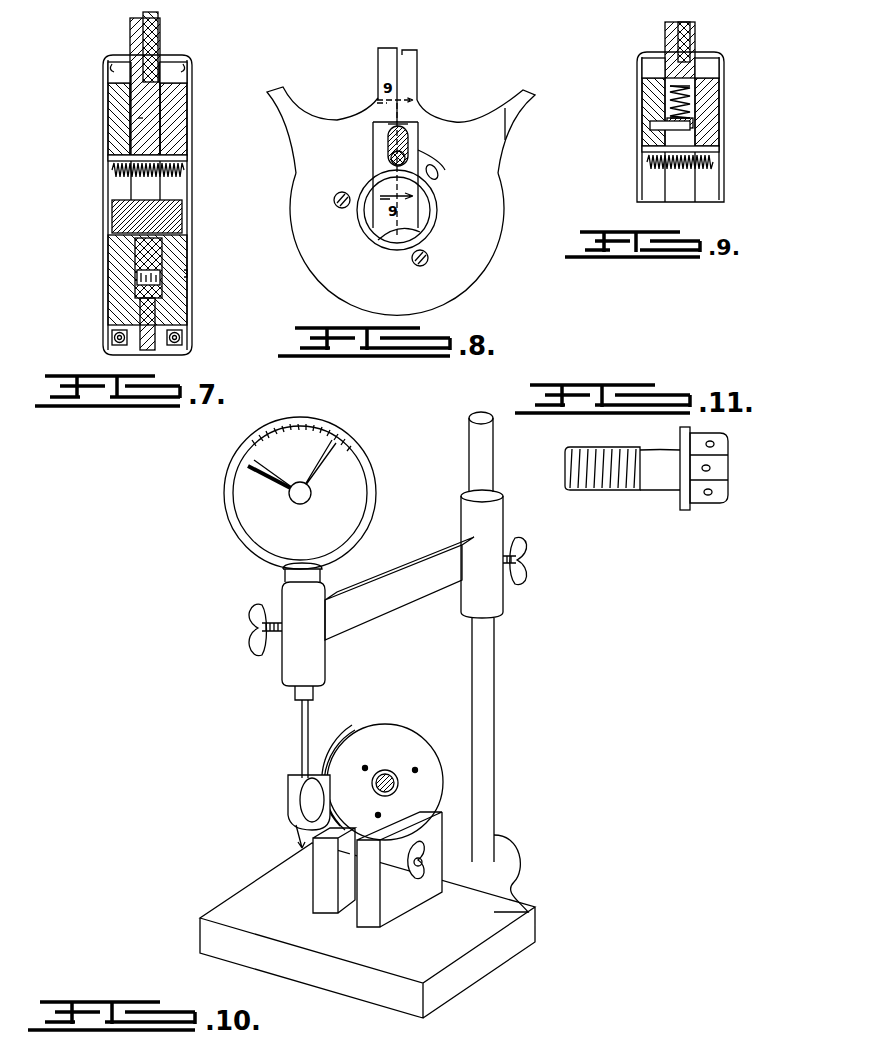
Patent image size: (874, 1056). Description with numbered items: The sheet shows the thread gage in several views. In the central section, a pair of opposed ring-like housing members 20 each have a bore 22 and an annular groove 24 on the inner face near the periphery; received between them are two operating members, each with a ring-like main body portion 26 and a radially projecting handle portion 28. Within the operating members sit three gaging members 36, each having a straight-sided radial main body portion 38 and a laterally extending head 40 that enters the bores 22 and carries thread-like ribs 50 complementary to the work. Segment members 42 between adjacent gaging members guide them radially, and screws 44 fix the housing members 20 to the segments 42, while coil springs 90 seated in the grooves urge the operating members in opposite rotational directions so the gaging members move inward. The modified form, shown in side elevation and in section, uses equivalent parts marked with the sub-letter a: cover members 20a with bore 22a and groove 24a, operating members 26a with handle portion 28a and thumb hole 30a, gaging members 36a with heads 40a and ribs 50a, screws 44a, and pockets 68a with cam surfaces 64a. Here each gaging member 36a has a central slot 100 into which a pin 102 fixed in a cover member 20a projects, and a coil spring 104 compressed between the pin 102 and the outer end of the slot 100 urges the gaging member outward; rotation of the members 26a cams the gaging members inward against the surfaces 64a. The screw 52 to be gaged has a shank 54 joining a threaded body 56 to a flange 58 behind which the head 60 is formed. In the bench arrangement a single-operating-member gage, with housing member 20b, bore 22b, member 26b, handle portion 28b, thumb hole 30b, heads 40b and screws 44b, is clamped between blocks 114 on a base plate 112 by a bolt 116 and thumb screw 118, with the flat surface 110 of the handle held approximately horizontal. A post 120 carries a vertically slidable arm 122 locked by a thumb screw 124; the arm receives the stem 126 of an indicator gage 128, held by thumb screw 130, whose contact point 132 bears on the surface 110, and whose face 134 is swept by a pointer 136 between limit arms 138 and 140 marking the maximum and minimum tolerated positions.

In FIG. 7, the housing member 20 is at (108, 110).
In FIG. 7, the bore 22 is at (112, 157).
In FIG. 7, the annular concentric groove 24 is at (108, 78).
In FIG. 7, the main body portion of operating member 26 is at (135, 72).
In FIG. 7, the handle portion 28 is at (160, 38).
In FIG. 7, the gaging member 36 is at (135, 128).
In FIG. 7, the main body portion of gaging member 38 is at (134, 123).
In FIG. 7, the head 40 is at (122, 170).
In FIG. 7, the segment member 42 is at (140, 250).
In FIG. 7, the screw 44 is at (190, 270).
In FIG. 7, the thread-like rib 50 is at (120, 214).
In FIG. 7, the coil spring 90 is at (112, 337).
In FIG. 8, the cover member 20a is at (300, 212).
In FIG. 9, the cover member 20a is at (640, 108).
In FIG. 9, the bore 22a is at (722, 66).
In FIG. 9, the annular groove 24a is at (642, 68).
In FIG. 8, the operating member 26a is at (300, 172).
In FIG. 9, the operating member 26a is at (700, 60).
In FIG. 8, the handle portion 28a is at (510, 130).
In FIG. 8, the thumb hole 30a is at (505, 105).
In FIG. 8, the gaging member 36a is at (372, 140).
In FIG. 9, the gaging member 36a is at (665, 86).
In FIG. 8, the head 40a is at (380, 236).
In FIG. 9, the head 40a is at (712, 158).
In FIG. 8, the screw 44a is at (422, 266).
In FIG. 9, the thread-like rib 50a is at (655, 176).
In FIG. 8, the cam surface 64a is at (437, 174).
In FIG. 8, the pocket 68a is at (372, 112).
In FIG. 8, the central slot 100 is at (388, 150).
In FIG. 9, the central slot 100 is at (695, 96).
In FIG. 8, the pin 102 is at (420, 160).
In FIG. 9, the pin 102 is at (650, 127).
In FIG. 8, the coil spring 104 is at (418, 120).
In FIG. 9, the coil spring 104 is at (695, 125).
In FIG. 11, the screw 52 is at (668, 476).
In FIG. 11, the shank 54 is at (672, 490).
In FIG. 11, the threaded body 56 is at (625, 433).
In FIG. 11, the flange 58 is at (690, 432).
In FIG. 11, the head 60 is at (728, 460).
In FIG. 10, the flat surface 110 is at (295, 775).
In FIG. 10, the base plate 112 is at (218, 910).
In FIG. 10, the block 114 is at (318, 896).
In FIG. 10, the bolt 116 is at (428, 870).
In FIG. 10, the thumb screw 118 is at (440, 898).
In FIG. 10, the post 120 is at (496, 690).
In FIG. 10, the arm 122 is at (393, 600).
In FIG. 10, the thumb screw 124 is at (520, 570).
In FIG. 10, the stem 126 is at (292, 692).
In FIG. 10, the indicator gage 128 is at (275, 493).
In FIG. 10, the thumb screw 130 is at (250, 625).
In FIG. 10, the contact point 132 is at (300, 725).
In FIG. 10, the face 134 is at (248, 513).
In FIG. 10, the pointer 136 is at (275, 490).
In FIG. 10, the limit arm 138 is at (240, 478).
In FIG. 10, the limit arm 140 is at (330, 468).
In FIG. 10, the housing member 20b is at (338, 740).
In FIG. 10, the bore 22b is at (395, 792).
In FIG. 10, the operating member 26b is at (365, 735).
In FIG. 10, the handle portion 28b is at (292, 830).
In FIG. 10, the thumb hole 30b is at (303, 800).
In FIG. 10, the head 40b is at (377, 812).
In FIG. 10, the screw 44b is at (415, 767).